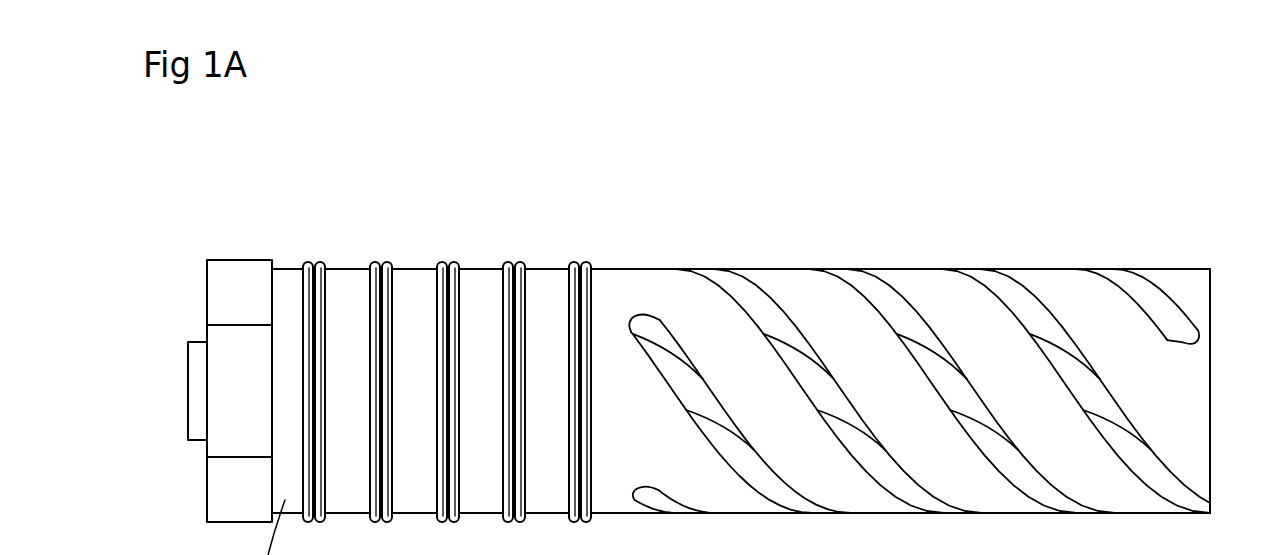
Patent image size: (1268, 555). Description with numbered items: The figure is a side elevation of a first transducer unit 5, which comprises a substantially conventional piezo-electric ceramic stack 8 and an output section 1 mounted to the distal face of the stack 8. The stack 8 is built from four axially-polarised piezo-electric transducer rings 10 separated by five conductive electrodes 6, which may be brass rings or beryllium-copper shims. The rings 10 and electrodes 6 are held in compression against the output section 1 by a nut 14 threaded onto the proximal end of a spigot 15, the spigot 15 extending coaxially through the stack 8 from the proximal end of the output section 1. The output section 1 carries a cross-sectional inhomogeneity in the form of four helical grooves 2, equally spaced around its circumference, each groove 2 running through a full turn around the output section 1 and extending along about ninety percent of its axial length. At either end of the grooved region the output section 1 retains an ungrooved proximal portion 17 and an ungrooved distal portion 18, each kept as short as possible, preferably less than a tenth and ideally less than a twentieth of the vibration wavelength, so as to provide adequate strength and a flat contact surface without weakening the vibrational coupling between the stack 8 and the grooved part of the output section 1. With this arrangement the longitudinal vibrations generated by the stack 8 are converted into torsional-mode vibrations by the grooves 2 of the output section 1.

The output section 1 is at (985, 210).
The helical grooves 2 is at (870, 290).
The first transducer unit 5 is at (1092, 168).
The conductive electrodes 6 is at (377, 277).
The piezo-electric ceramic stack 8 is at (390, 175).
The piezo-electric transducer rings 10 is at (537, 278).
The nut 14 is at (238, 488).
The spigot 15 is at (197, 373).
The ungrooved proximal portion 17 is at (612, 300).
The ungrooved distal portion 18 is at (1178, 282).